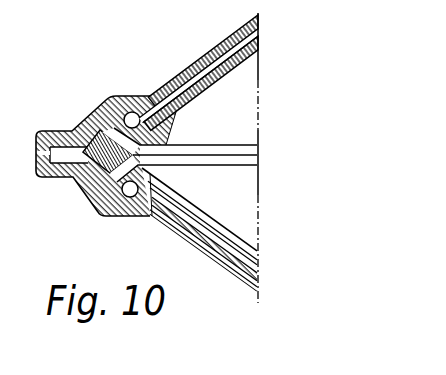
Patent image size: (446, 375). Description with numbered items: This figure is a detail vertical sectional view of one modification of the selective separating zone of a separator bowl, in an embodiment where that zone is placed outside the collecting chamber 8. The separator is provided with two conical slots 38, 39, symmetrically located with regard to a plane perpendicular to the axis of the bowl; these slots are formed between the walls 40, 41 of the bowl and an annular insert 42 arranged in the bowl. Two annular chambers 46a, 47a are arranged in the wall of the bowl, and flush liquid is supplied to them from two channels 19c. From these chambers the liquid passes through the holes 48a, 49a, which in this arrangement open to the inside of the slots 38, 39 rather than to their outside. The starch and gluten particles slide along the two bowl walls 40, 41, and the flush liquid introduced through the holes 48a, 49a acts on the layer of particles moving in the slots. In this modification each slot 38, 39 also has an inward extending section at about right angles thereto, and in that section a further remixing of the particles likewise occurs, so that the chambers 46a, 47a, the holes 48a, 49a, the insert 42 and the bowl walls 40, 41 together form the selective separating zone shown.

The annular insert 42 is at (90, 133).
The conical slot 39 is at (107, 123).
The annular chamber 47a is at (132, 114).
The hole 49a is at (150, 97).
The bowl wall 41 is at (210, 62).
The channel 19c is at (228, 283).
The conical slot 38 is at (88, 183).
The hole 48a is at (100, 203).
The annular chamber 46a is at (130, 190).
The bowl wall 40 is at (185, 212).
The collecting chamber 8 is at (235, 212).